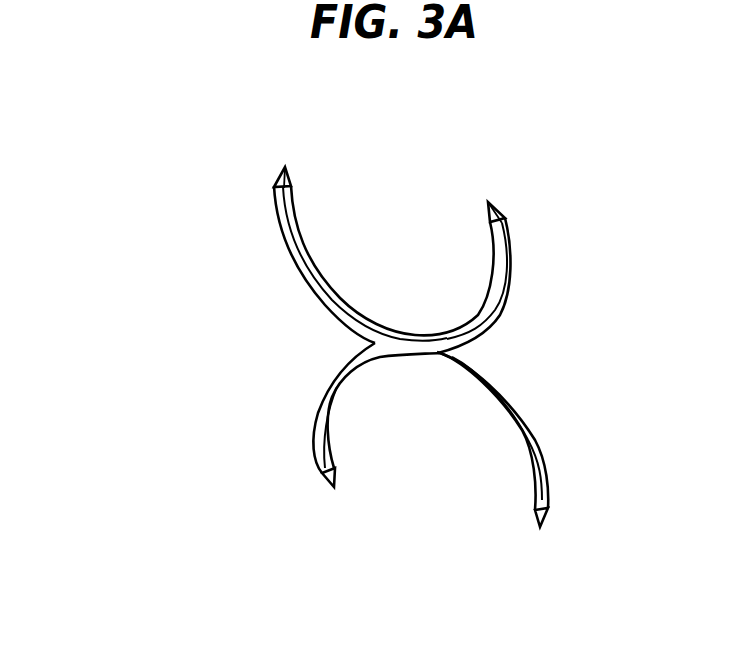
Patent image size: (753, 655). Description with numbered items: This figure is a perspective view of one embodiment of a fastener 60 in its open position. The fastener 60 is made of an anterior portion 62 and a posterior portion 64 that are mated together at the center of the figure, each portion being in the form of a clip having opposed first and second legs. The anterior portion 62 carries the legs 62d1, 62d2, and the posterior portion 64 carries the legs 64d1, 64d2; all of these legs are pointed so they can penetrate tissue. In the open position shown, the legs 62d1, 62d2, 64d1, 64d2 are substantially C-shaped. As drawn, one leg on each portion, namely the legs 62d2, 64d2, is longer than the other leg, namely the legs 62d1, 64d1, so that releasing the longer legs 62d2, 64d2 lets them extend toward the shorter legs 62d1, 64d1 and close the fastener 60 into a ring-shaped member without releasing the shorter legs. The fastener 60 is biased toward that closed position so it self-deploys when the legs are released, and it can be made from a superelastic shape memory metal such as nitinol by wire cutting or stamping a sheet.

The fastener 60 is at (171, 194).
The anterior portion 62 is at (563, 203).
The posterior portion 64 is at (580, 365).
The first leg of anterior portion 62d1 is at (283, 181).
The second leg of anterior portion 62d2 is at (488, 202).
The first leg of posterior portion 64d1 is at (334, 488).
The second leg of posterior portion 64d2 is at (540, 527).